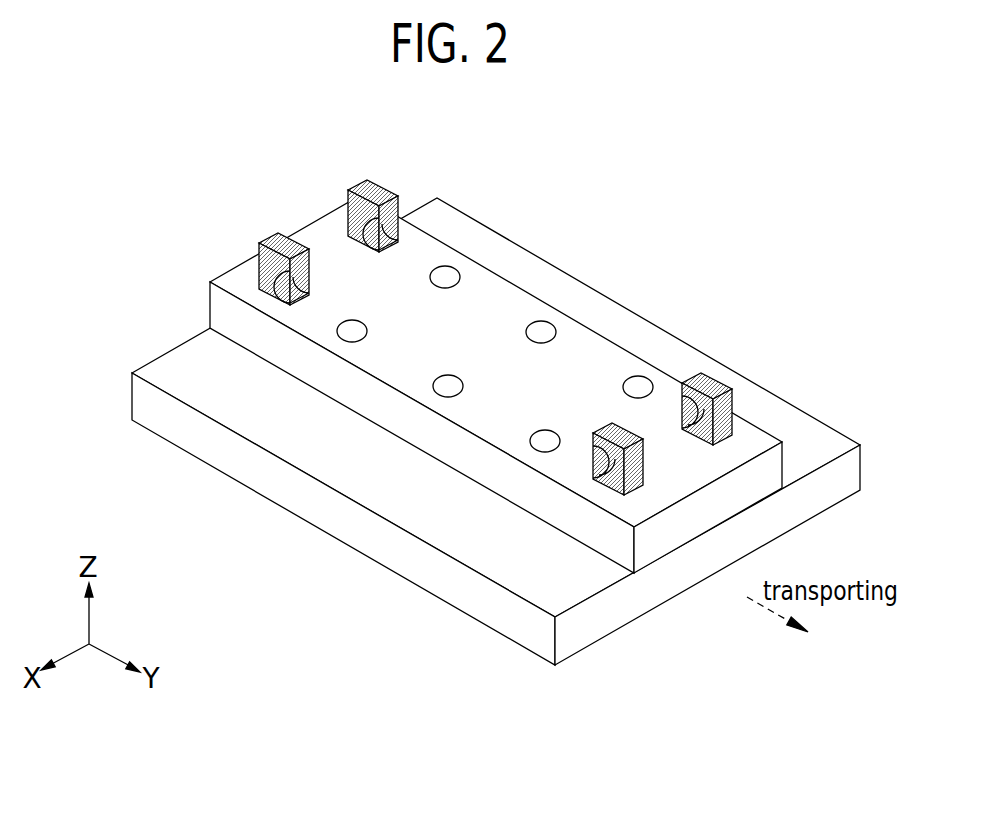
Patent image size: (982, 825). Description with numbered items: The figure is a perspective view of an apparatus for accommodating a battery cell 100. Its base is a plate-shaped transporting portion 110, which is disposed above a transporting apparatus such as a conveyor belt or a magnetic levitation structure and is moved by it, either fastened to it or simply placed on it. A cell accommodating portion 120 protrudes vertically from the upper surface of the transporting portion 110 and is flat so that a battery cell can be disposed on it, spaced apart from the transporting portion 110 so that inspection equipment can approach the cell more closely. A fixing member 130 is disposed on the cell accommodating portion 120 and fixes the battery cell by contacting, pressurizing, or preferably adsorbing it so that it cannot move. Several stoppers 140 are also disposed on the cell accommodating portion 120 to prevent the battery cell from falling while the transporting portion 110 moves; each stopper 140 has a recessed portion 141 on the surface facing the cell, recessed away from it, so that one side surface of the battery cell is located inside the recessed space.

The apparatus for accommodating battery cell 100 is at (143, 121).
The transporting portion 110 is at (132, 374).
The cell accommodating portion 120 is at (221, 275).
The fixing member 130 is at (453, 271).
The stopper 140 is at (260, 266).
The recessed portion 141 is at (390, 223).